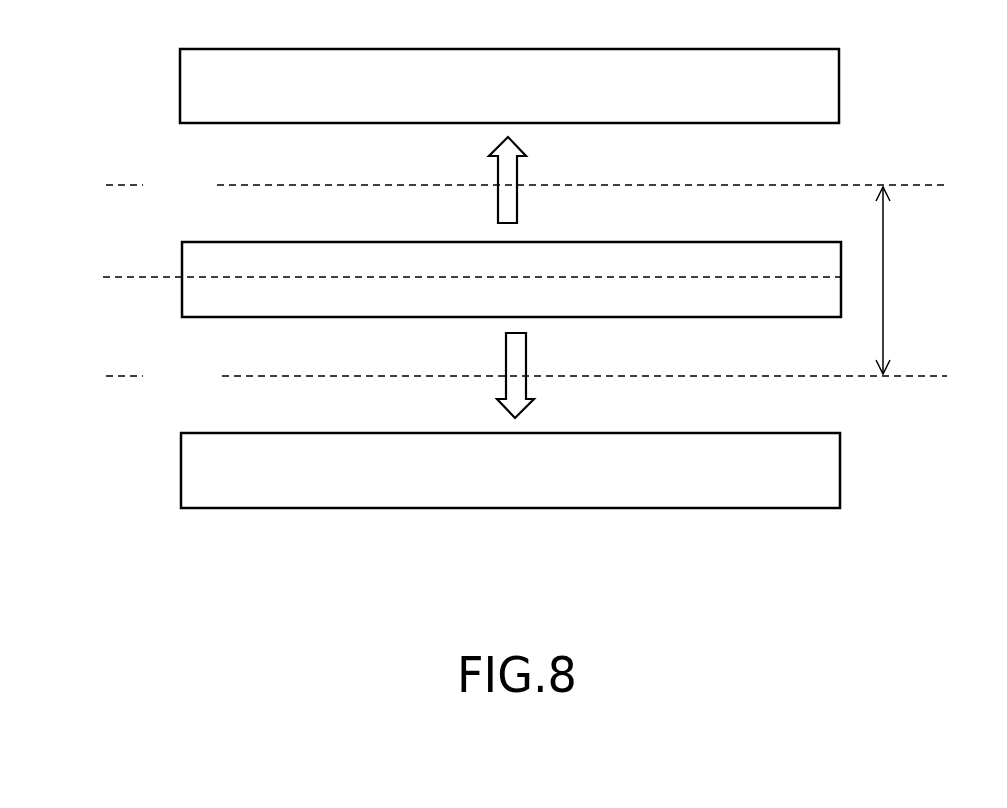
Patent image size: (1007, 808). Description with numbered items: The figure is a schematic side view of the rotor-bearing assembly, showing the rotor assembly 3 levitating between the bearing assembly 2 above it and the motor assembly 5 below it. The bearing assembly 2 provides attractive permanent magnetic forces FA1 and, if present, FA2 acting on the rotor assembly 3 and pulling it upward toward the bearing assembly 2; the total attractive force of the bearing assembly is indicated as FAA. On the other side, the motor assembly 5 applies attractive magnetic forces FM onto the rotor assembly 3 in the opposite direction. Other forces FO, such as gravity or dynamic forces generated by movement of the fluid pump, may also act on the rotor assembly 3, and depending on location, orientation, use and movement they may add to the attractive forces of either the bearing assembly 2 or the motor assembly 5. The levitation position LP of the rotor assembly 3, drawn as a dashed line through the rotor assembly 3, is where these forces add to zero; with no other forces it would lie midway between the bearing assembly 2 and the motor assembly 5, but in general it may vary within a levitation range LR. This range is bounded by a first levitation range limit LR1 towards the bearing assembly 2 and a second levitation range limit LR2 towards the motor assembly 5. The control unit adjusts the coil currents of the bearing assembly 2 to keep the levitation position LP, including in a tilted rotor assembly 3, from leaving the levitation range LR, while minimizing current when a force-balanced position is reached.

The bearing assembly 2 is at (509, 86).
The rotor assembly 3 is at (168, 250).
The motor assembly 5 is at (510, 470).
The levitation position LP is at (120, 288).
The first levitation range limit LR1 is at (526, 184).
The second levitation range limit LR2 is at (526, 375).
The levitation range LR is at (903, 280).
The attractive permanent magnetic force FA1 is at (653, 180).
The attractive permanent magnetic force FA2 is at (653, 180).
The total actuating force FAA is at (653, 180).
The other forces FO is at (536, 172).
The attractive magnetic forces FM is at (543, 383).